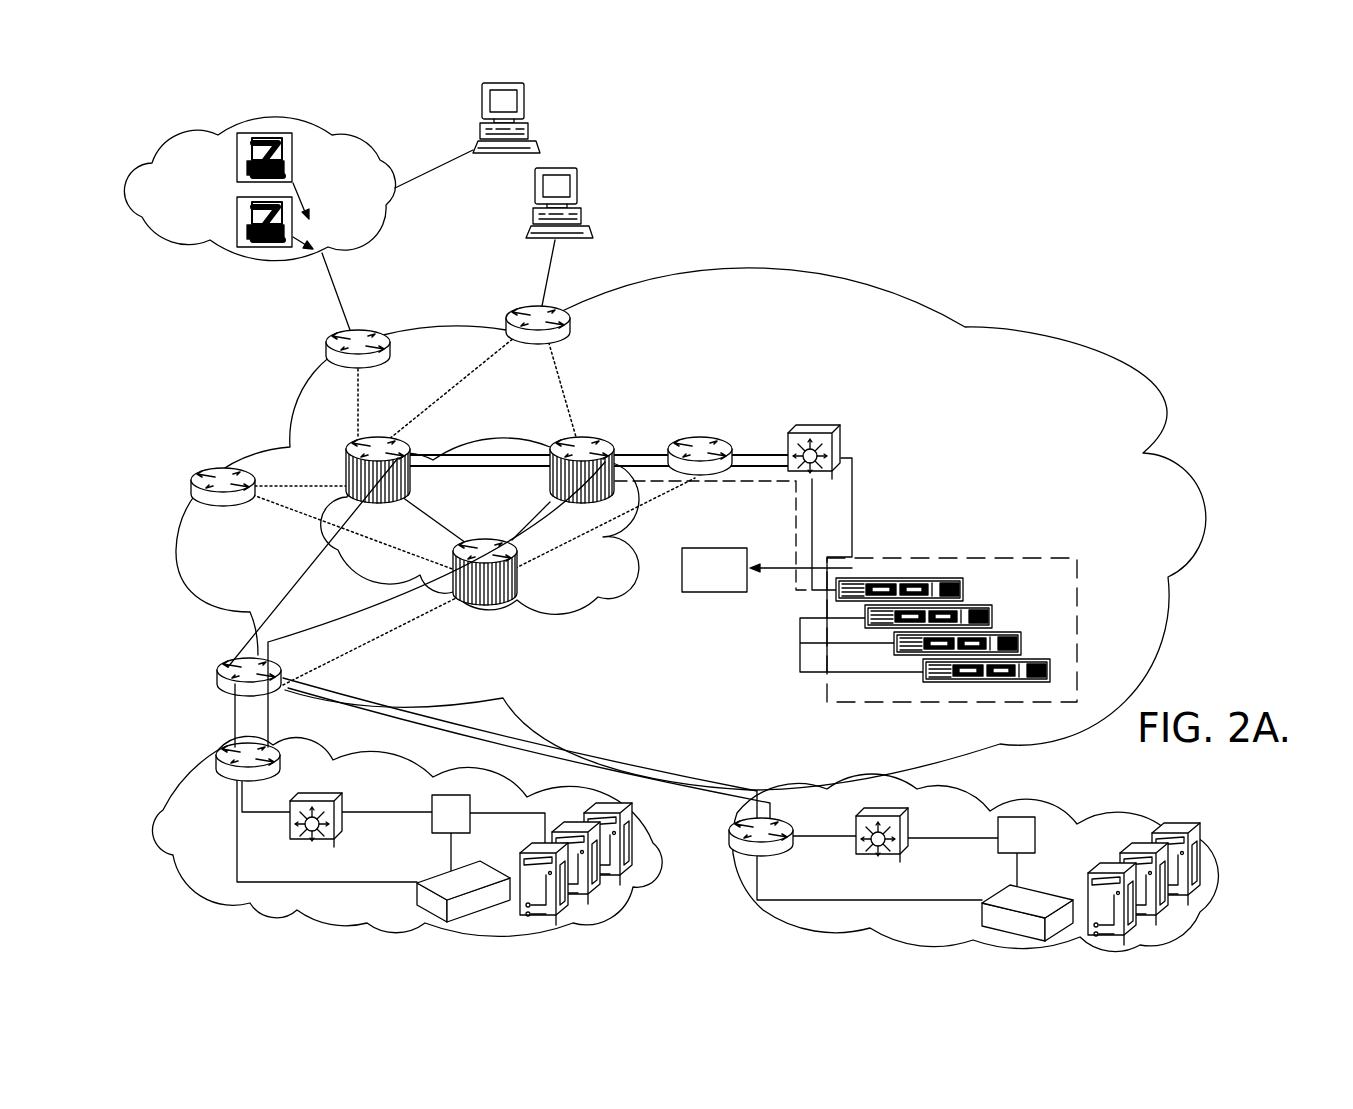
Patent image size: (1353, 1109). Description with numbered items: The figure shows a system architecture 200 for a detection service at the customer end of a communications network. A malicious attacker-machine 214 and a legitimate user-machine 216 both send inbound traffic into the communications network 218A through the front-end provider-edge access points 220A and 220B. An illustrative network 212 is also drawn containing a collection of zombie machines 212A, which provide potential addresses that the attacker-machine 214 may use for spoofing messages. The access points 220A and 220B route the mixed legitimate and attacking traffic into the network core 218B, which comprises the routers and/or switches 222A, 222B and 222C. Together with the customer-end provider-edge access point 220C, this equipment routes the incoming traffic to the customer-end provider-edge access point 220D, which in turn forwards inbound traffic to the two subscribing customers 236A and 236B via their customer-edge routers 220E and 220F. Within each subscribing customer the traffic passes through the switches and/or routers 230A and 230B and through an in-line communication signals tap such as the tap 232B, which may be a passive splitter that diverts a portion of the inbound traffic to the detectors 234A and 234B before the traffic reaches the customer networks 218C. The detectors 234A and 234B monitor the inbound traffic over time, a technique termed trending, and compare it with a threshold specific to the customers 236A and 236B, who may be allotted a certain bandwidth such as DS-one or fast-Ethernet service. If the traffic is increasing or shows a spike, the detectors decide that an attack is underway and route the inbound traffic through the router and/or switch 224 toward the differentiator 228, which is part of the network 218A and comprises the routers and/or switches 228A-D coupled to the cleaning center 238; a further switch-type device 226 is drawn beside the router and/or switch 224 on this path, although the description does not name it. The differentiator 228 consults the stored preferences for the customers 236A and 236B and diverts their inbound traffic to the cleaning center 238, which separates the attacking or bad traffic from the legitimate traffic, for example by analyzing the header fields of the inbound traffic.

The system architecture 200 is at (678, 519).
The network 212 is at (286, 117).
The zombie machines 212A is at (222, 193).
The malicious attacker-machine 214 is at (524, 110).
The legitimate user-machine 216 is at (578, 190).
The communications network 218A is at (838, 273).
The network core 218B is at (603, 592).
The customer networks 218C is at (263, 912).
The front-end provider-edge access point 220A is at (513, 307).
The front-end provider-edge access point 220B is at (332, 335).
The customer-end provider-edge access point 220C is at (200, 472).
The customer-end provider-edge access point 220D is at (230, 657).
The customer-edge router 220E is at (227, 750).
The customer-edge router 220F is at (732, 826).
The router and/or switch 222A is at (606, 440).
The router and/or switch 222B is at (505, 605).
The router and/or switch 222C is at (349, 470).
The router and/or switch 224 is at (697, 437).
The switch 226 is at (807, 427).
The differentiator 228 is at (938, 556).
The routers and/or switches 228A-D is at (1037, 610).
The switch and/or router 230A is at (326, 848).
The switch and/or router 230B is at (862, 863).
The in-line communication signals tap 232B is at (468, 836).
The detector 234A is at (425, 876).
The detector 234B is at (997, 892).
The subscribing customer 236A is at (645, 879).
The subscribing customer 236B is at (1198, 917).
The cleaning center 238 is at (727, 597).